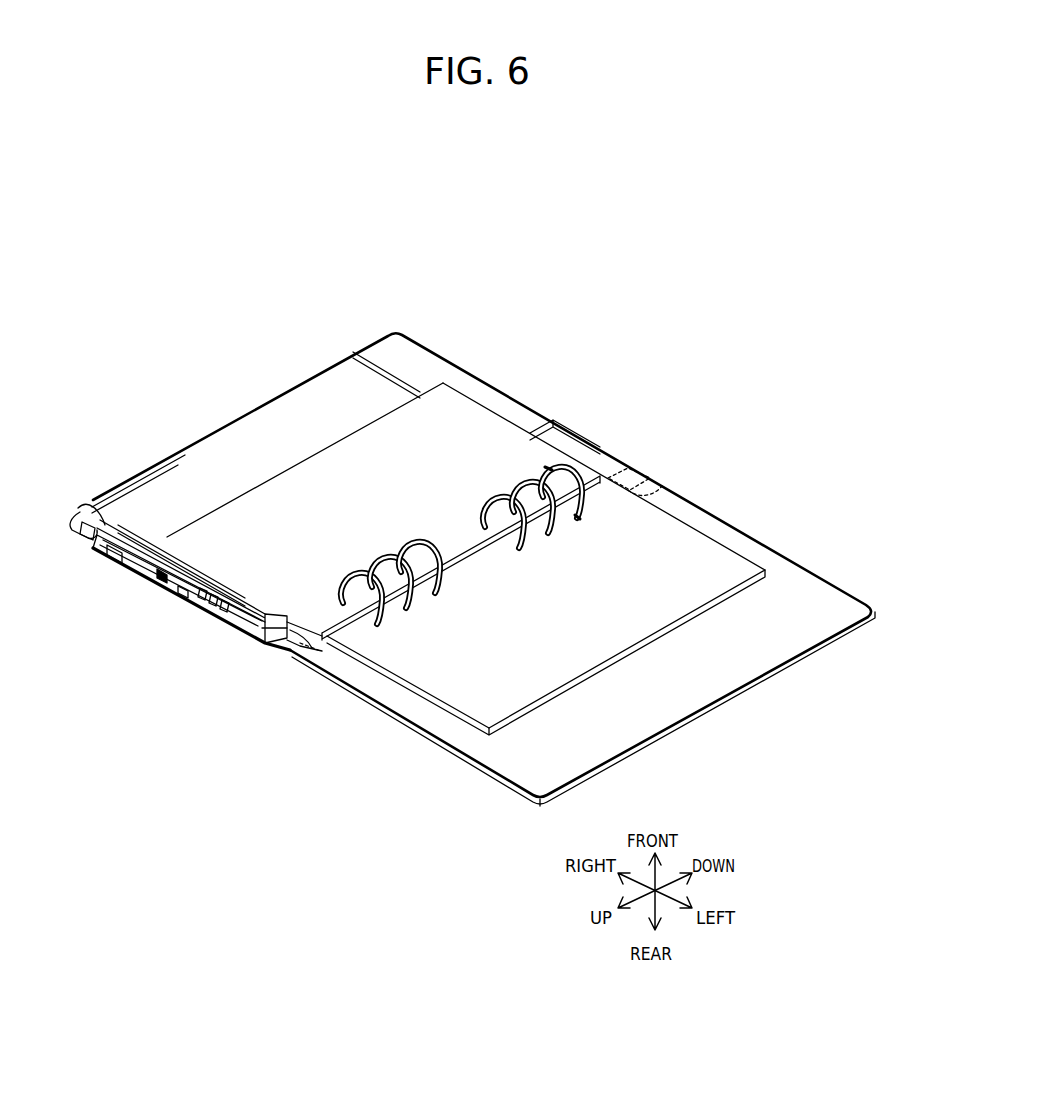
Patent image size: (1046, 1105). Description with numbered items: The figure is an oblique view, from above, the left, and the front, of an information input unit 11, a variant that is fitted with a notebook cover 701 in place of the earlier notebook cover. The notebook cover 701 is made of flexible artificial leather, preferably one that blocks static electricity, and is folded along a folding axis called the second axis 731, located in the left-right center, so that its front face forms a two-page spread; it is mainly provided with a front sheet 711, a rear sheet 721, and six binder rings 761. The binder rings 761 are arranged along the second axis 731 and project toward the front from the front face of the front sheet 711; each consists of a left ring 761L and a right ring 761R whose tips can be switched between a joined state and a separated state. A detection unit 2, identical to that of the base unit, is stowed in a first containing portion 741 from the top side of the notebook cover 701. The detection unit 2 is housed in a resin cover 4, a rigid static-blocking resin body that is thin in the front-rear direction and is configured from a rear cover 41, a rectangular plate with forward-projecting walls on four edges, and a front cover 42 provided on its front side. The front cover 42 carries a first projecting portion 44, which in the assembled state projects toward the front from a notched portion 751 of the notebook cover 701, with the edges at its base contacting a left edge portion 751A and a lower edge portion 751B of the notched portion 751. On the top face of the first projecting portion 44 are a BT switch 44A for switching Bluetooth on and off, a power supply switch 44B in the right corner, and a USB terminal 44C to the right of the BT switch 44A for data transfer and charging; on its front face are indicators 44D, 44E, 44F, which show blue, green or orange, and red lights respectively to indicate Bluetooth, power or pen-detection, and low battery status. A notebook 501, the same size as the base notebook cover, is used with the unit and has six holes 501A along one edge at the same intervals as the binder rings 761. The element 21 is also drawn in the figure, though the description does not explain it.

The information input unit 11 is at (651, 358).
The detection unit 2 is at (233, 622).
The resin cover 4 is at (137, 562).
The rear cover 41 is at (126, 565).
The front cover 42 is at (88, 533).
The first projecting portion 44 is at (188, 560).
The BT switch 44A is at (183, 600).
The power supply switch 44B is at (112, 558).
The USB terminal 44C is at (160, 585).
The indicator 44D is at (224, 616).
The indicator 44E is at (213, 610).
The indicator 44F is at (202, 603).
The hinge shaft 21 is at (650, 476).
The notebook 501 is at (713, 560).
The holes 501A is at (370, 627).
The notebook cover 701 is at (818, 598).
The front sheet 711 is at (665, 665).
The rear sheet 721 is at (252, 632).
The second axis 731 is at (626, 478).
The first containing portion 741 is at (72, 540).
The notched portion 751 is at (313, 636).
The left edge portion 751A is at (284, 636).
The lower edge portion 751B is at (90, 508).
The binder rings 761 is at (561, 462).
The right ring 761R is at (548, 466).
The left ring 761L is at (582, 517).